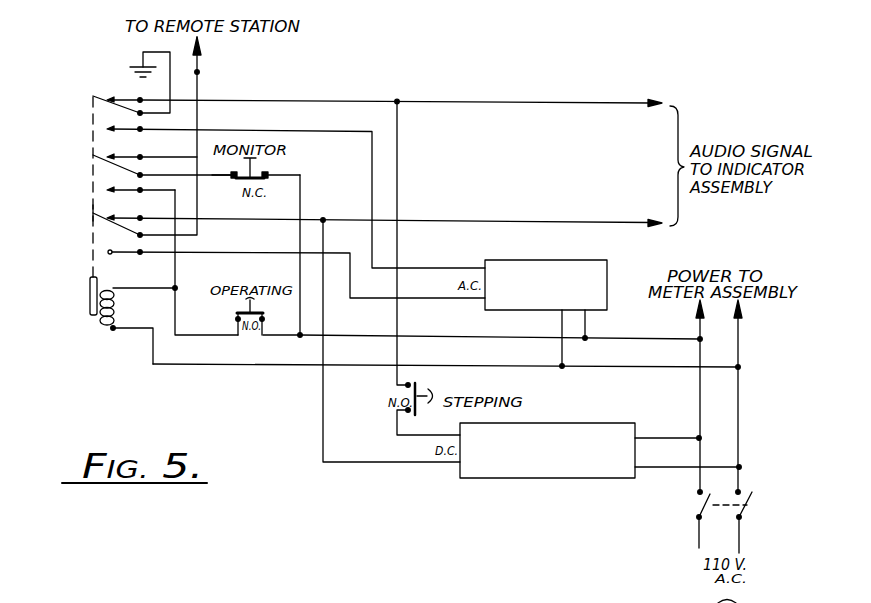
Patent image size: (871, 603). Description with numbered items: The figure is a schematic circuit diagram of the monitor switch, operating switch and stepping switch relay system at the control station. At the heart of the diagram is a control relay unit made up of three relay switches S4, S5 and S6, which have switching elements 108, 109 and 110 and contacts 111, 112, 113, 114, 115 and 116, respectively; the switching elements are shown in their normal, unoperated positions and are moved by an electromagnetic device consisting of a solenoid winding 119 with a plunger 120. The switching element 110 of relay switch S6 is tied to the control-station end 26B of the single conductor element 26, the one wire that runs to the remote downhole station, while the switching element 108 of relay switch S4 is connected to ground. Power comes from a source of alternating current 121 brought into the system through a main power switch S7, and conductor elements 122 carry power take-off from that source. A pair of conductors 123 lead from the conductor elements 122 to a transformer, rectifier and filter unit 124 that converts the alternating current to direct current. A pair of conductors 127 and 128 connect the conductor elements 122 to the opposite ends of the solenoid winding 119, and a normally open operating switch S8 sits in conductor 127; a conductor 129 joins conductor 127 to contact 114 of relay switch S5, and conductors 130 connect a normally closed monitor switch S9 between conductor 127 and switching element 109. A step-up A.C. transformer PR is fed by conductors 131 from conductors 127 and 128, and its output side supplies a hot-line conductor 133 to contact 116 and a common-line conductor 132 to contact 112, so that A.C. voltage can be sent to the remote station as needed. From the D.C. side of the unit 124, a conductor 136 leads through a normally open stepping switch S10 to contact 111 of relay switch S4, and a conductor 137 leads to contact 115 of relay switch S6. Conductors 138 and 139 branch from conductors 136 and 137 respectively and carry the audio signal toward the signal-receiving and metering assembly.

The single conductor element 26 is at (200, 58).
The control-station end 26B is at (206, 151).
The switching element 108 is at (95, 97).
The switching element 109 is at (100, 161).
The switching element 110 is at (105, 226).
The contact 111 is at (125, 95).
The contact 112 is at (130, 130).
The contact 113 is at (130, 158).
The contact 114 is at (122, 192).
The contact 115 is at (90, 213).
The contact 116 is at (122, 252).
The solenoid winding 119 is at (100, 327).
The plunger 120 is at (90, 292).
The source of alternating current 121 is at (760, 479).
The conductor elements 122 is at (740, 415).
The pair of conductors 123 is at (652, 440).
The transformer, rectifier and filter unit 124 is at (593, 483).
The conductor 127 is at (175, 318).
The conductor 128 is at (217, 364).
The conductor 129 is at (175, 273).
The conductors 130 is at (212, 175).
The conductors 131 is at (563, 353).
The conductor 132 is at (433, 267).
The conductor 133 is at (418, 297).
The conductor 136 is at (398, 180).
The conductor 137 is at (323, 430).
The conductor 138 is at (518, 100).
The conductor 139 is at (538, 220).
The step up transformer PR is at (608, 272).
The relay switch S4 is at (106, 113).
The relay switch S5 is at (92, 174).
The relay switch S6 is at (99, 240).
The main power switch S7 is at (752, 508).
The operating switch S8 is at (241, 341).
The monitor switch S9 is at (272, 166).
The stepping switch S10 is at (388, 398).